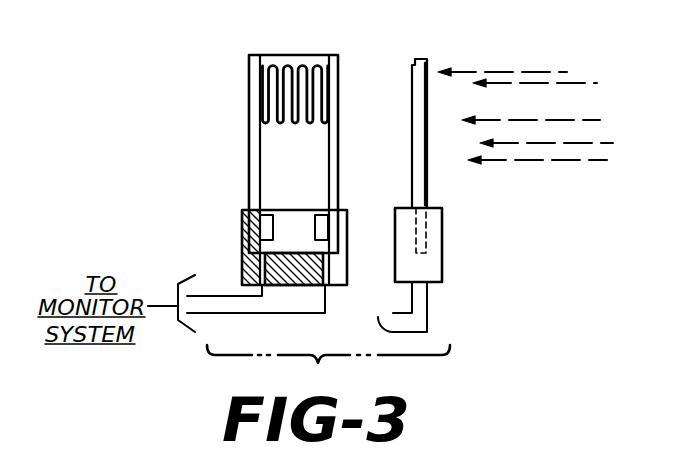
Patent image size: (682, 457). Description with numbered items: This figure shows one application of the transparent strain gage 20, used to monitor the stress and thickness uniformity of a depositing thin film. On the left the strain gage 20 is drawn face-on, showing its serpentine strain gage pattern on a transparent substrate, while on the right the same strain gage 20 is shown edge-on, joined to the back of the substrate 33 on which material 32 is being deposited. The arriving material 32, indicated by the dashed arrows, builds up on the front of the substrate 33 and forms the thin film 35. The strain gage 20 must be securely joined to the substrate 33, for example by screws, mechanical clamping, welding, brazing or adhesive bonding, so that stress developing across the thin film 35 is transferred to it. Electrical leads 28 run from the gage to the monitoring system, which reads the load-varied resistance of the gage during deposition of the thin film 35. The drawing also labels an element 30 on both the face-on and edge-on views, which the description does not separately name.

The strain gage 20 is at (410, 98).
The electrical leads 28 is at (312, 314).
The substrate 30 is at (247, 117).
The material 32 is at (574, 86).
The substrate 33 is at (422, 233).
The thin film 35 is at (428, 177).